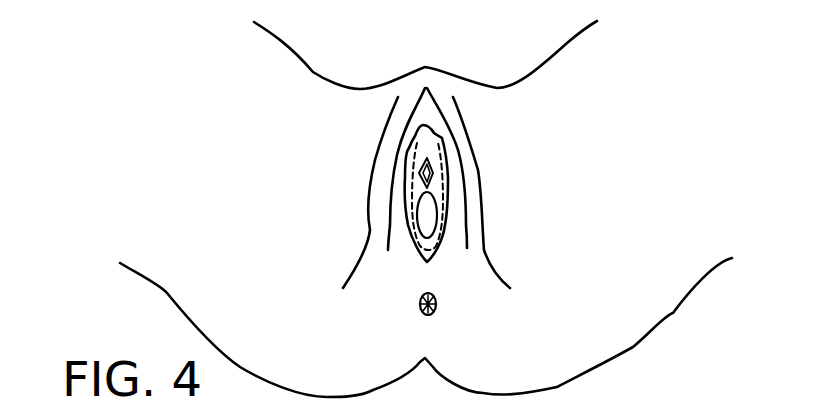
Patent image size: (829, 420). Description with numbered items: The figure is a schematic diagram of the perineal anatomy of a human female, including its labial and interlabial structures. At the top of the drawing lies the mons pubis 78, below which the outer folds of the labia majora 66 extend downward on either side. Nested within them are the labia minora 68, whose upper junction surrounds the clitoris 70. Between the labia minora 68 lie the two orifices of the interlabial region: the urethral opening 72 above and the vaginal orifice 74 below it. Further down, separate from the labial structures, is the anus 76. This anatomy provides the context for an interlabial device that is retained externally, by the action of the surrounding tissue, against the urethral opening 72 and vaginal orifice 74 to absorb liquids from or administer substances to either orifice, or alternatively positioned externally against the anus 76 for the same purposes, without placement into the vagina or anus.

The labia majora 66 is at (453, 133).
The labia minora 68 is at (404, 189).
The clitoris 70 is at (413, 143).
The urethral opening 72 is at (420, 173).
The vaginal orifice 74 is at (425, 212).
The anus 76 is at (436, 306).
The mons pubis 78 is at (425, 88).